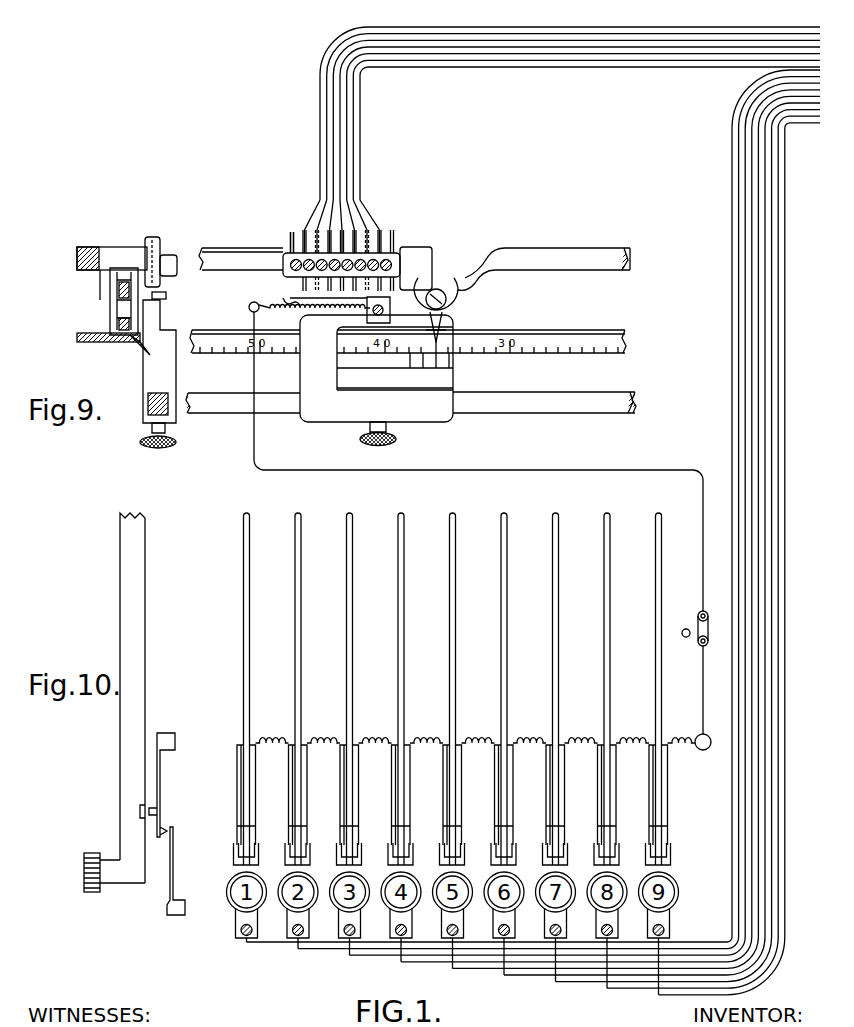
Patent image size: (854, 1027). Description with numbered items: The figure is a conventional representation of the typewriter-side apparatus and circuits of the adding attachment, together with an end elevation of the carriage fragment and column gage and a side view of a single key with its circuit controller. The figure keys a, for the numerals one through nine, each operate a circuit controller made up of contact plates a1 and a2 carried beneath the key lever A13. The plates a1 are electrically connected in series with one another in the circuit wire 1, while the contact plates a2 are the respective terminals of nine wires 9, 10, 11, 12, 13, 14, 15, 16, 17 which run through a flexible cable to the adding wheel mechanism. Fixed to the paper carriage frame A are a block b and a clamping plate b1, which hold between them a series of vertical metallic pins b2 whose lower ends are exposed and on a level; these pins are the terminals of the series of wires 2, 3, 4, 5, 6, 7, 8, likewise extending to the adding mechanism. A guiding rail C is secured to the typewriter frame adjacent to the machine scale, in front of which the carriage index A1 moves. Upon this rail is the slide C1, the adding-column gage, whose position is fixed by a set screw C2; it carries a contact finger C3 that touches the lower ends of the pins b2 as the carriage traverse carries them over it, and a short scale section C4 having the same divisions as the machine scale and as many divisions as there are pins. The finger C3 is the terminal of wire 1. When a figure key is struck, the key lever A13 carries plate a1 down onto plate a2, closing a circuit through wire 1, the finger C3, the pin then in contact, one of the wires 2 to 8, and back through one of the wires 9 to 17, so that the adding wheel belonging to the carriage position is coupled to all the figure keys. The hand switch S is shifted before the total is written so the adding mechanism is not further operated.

In FIG. 1, the circuit wire 1 is at (597, 472).
In FIG. 1, the wire 2 is at (376, 28).
In FIG. 1, the wire 3 is at (393, 34).
In FIG. 1, the wire 4 is at (416, 40).
In FIG. 1, the wire 5 is at (429, 48).
In FIG. 1, the wire 6 is at (443, 55).
In FIG. 1, the wire 7 is at (460, 62).
In FIG. 1, the wire 8 is at (486, 68).
In FIG. 1, the wire 9 is at (732, 182).
In FIG. 1, the wire 10 is at (739, 199).
In FIG. 1, the wire 11 is at (745, 219).
In FIG. 1, the wire 12 is at (752, 237).
In FIG. 1, the wire 13 is at (758, 257).
In FIG. 1, the wire 14 is at (765, 277).
In FIG. 1, the wire 15 is at (772, 296).
In FIG. 1, the wire 16 is at (778, 315).
In FIG. 1, the wire 17 is at (785, 333).
In FIG. 1, the paper carriage frame A is at (500, 251).
In FIG. 9, the paper carriage frame A is at (99, 250).
In FIG. 1, the carriage index A1 is at (460, 306).
In FIG. 9, the carriage index A1 is at (128, 338).
In FIG. 1, the key lever A13 is at (502, 662).
In FIG. 10, the key lever A13 is at (140, 716).
In FIG. 1, the block b is at (425, 249).
In FIG. 1, the clamping plate b1 is at (398, 258).
In FIG. 9, the clamping plate b1 is at (177, 262).
In FIG. 1, the metallic pins b2 is at (302, 232).
In FIG. 9, the metallic pins b2 is at (158, 240).
In FIG. 1, the guiding rail C is at (411, 368).
In FIG. 9, the guiding rail C is at (148, 405).
In FIG. 9, the slide C1 is at (170, 382).
In FIG. 1, the set screw C2 is at (376, 445).
In FIG. 9, the set screw C2 is at (156, 448).
In FIG. 1, the contact finger C3 is at (283, 300).
In FIG. 9, the contact finger C3 is at (167, 296).
In FIG. 1, the scale section C4 is at (395, 370).
In FIG. 1, the hand switch S is at (692, 626).
In FIG. 1, the figure keys a is at (438, 908).
In FIG. 10, the figure keys a is at (84, 873).
In FIG. 1, the contact plate a1 is at (456, 803).
In FIG. 10, the contact plate a1 is at (161, 795).
In FIG. 1, the contact plate a2 is at (457, 862).
In FIG. 10, the contact plate a2 is at (174, 870).